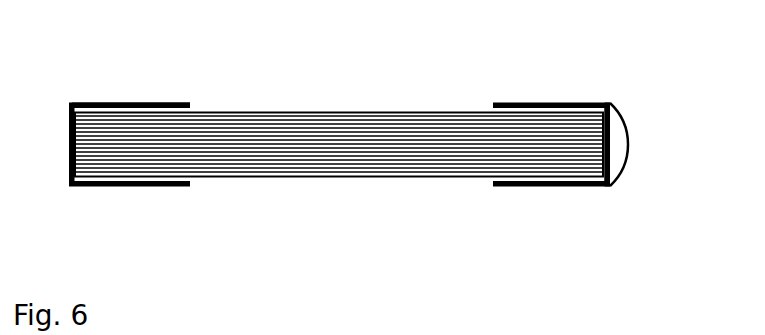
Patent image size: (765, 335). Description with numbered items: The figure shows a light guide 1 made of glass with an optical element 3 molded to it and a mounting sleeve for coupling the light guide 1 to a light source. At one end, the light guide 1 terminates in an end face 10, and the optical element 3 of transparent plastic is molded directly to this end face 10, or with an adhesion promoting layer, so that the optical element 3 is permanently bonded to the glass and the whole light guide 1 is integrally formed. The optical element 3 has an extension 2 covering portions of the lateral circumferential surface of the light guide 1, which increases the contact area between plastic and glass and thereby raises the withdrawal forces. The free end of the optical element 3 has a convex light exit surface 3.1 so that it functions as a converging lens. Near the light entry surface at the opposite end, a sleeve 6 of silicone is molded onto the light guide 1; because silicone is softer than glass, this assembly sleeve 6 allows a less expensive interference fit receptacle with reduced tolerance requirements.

The light guide 1 is at (242, 140).
The extension 2 is at (135, 100).
The optical element 3 is at (612, 107).
The light exit surface 3.1 is at (622, 128).
The sleeve 6 is at (90, 100).
The end face 10 is at (605, 158).